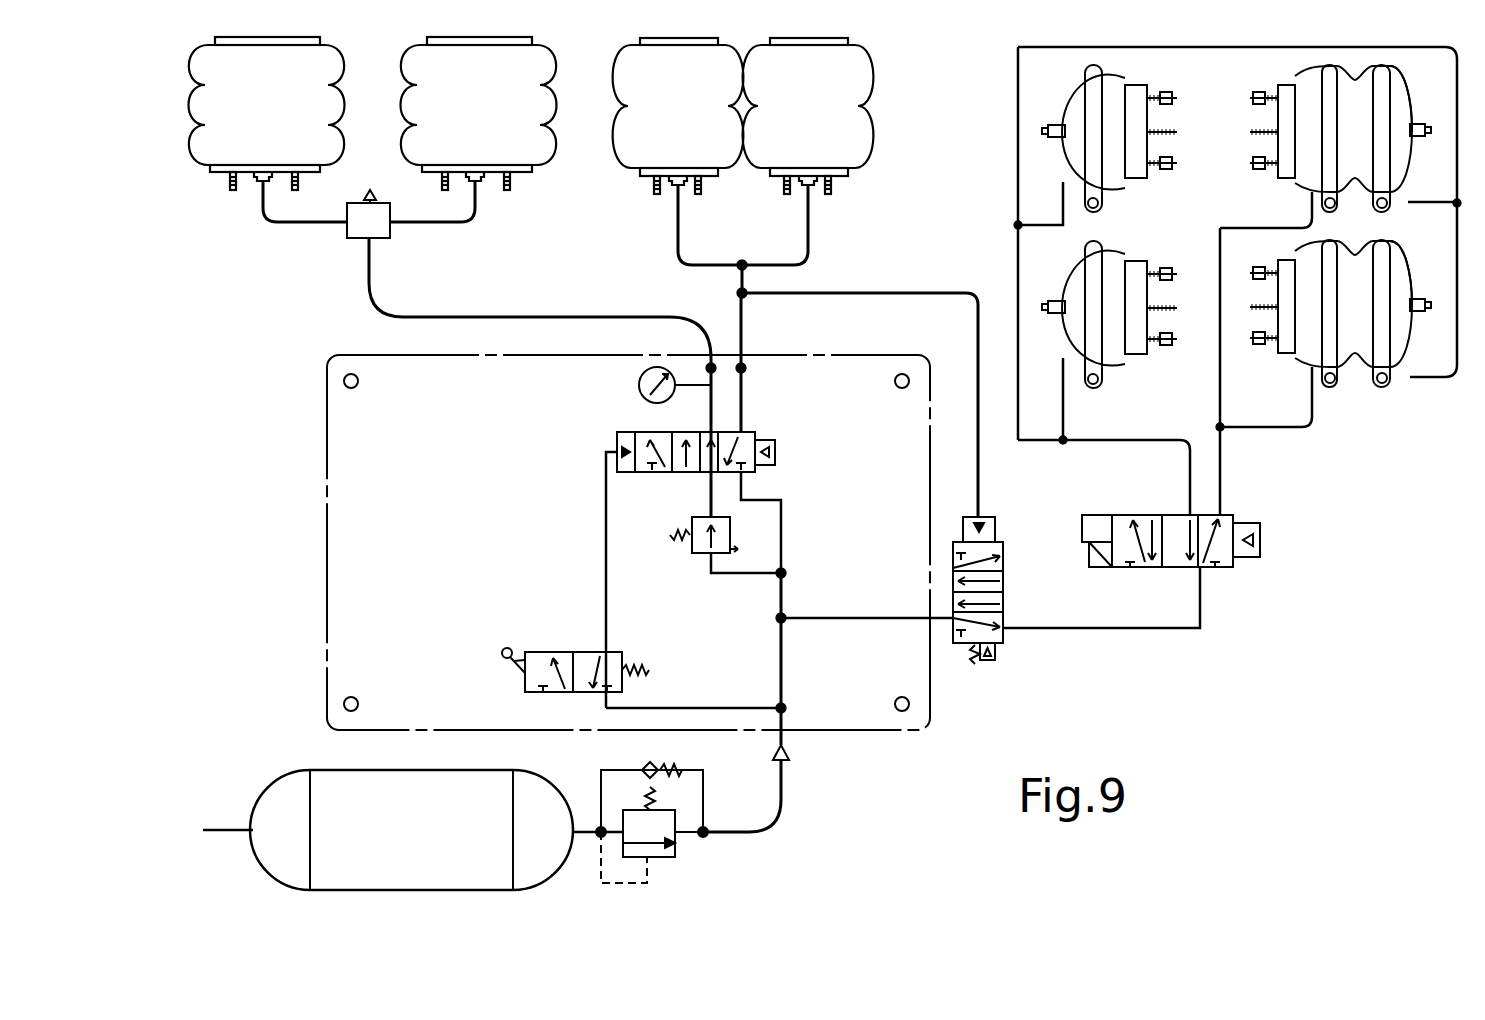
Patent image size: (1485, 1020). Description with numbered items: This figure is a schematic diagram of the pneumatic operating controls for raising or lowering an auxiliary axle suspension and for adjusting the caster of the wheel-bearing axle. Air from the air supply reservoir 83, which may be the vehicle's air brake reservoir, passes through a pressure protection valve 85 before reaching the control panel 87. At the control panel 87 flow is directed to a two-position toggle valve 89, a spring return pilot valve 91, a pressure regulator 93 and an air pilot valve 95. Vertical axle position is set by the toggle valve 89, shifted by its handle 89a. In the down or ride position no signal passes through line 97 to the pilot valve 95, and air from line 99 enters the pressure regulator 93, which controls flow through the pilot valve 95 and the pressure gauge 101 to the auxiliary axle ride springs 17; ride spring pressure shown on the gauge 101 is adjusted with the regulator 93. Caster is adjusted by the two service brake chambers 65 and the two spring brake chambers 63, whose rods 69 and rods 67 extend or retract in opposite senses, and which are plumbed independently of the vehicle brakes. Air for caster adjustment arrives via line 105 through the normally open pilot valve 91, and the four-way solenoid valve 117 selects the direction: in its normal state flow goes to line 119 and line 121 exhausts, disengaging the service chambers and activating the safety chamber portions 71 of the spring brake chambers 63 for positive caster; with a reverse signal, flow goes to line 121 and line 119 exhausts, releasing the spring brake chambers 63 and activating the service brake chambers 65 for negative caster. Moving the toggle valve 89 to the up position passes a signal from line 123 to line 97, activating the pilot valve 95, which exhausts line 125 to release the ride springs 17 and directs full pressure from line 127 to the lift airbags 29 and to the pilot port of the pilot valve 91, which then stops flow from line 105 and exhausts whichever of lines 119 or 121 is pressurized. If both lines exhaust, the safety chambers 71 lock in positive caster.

The auxiliary axle ride springs 17 is at (275, 116).
The lift airbags 29 is at (692, 117).
The spring brake chambers 63 is at (1342, 147).
The service brake chambers 65 is at (1112, 172).
The rods 67 is at (1255, 133).
The rods 69 is at (1168, 127).
The safety chamber portions 71 is at (1400, 86).
The air supply reservoir 83 is at (466, 835).
The pressure protection valve 85 is at (692, 847).
The control panel 87 is at (932, 707).
The two-position toggle valve 89 is at (622, 650).
The handle 89a is at (513, 658).
The spring return pilot valve 91 is at (1003, 545).
The pressure regulator 93 is at (690, 553).
The air pilot valve 95 is at (755, 430).
The line 97 is at (605, 525).
The line 99 is at (760, 573).
The pressure gauge 101 is at (640, 385).
The line 105 is at (893, 617).
The 4-way solenoid valve 117 is at (1097, 518).
The line 119 is at (1220, 468).
The line 121 is at (1148, 442).
The line 123 is at (675, 706).
The line 125 is at (505, 318).
The line 127 is at (784, 522).